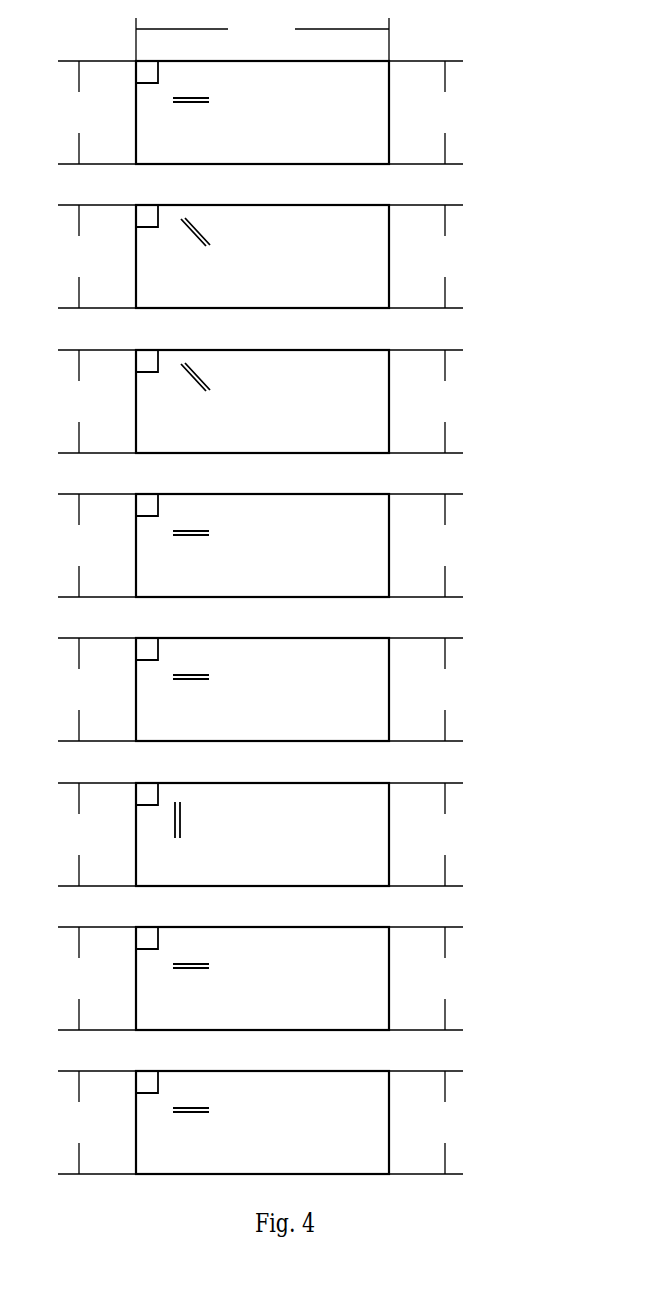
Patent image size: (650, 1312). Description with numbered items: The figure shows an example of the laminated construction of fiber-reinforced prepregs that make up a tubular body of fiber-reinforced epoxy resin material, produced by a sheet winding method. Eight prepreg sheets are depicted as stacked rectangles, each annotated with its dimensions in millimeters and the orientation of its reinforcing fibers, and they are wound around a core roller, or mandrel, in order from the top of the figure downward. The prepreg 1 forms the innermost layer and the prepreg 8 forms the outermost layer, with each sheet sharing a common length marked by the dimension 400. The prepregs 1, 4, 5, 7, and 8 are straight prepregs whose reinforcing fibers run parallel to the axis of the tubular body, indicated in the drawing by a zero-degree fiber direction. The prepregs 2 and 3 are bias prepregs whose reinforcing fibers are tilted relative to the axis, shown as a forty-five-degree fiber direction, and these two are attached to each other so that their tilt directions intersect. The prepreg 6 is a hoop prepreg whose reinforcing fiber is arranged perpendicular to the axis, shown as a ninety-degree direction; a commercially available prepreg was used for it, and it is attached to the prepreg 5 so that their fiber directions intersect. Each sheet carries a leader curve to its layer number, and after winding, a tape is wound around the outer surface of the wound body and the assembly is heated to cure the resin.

The prepreg 1 is at (353, 110).
The prepreg 2 is at (353, 254).
The prepreg 3 is at (353, 399).
The prepreg 4 is at (353, 543).
The prepreg 5 is at (353, 687).
The prepreg 6 is at (353, 832).
The prepreg 7 is at (353, 976).
The prepreg 8 is at (353, 1120).
The layer width dimension 400 is at (262, 39).